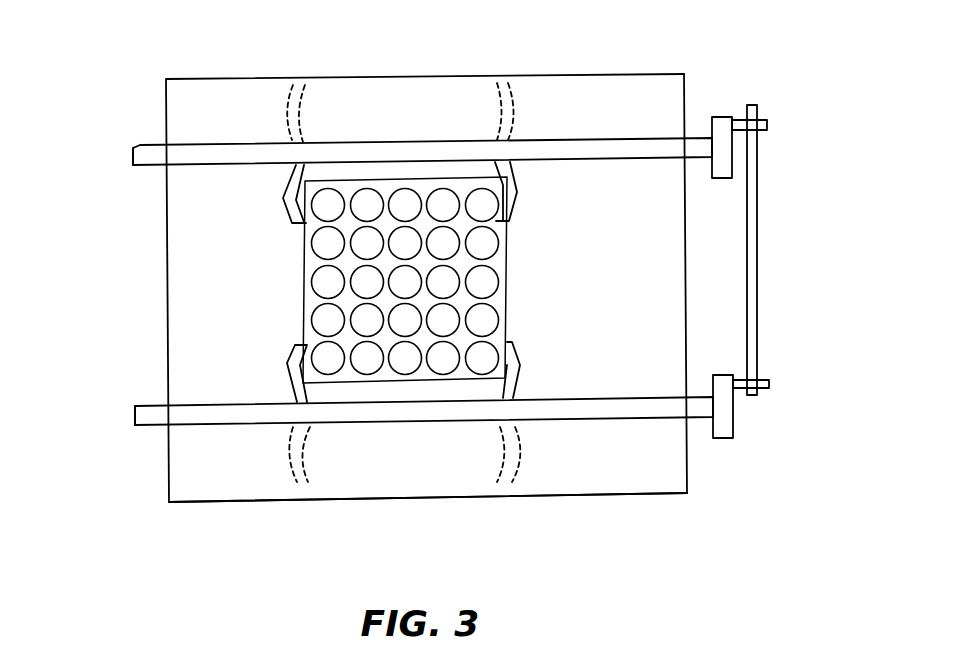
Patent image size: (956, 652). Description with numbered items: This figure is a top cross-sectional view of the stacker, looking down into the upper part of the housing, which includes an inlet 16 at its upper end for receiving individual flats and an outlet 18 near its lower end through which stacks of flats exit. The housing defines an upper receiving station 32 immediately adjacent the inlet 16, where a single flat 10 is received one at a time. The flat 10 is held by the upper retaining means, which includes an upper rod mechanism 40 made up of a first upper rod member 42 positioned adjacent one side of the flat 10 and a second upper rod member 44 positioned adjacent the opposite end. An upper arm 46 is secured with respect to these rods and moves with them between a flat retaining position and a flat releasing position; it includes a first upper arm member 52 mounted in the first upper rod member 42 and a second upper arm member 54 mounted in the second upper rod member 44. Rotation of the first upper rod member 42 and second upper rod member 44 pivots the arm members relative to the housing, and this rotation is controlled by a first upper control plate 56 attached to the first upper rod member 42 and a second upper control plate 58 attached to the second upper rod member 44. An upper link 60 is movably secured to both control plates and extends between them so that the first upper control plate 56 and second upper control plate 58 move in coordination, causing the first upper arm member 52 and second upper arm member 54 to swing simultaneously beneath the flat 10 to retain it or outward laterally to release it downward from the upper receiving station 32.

The flat 10 is at (508, 270).
The inlet 16 is at (167, 293).
The outlet 18 is at (687, 270).
The upper receiving station 32 is at (685, 458).
The upper rod mechanism 40 is at (140, 150).
The first upper rod member 42 is at (590, 145).
The second upper rod member 44 is at (612, 408).
The upper arm 46 is at (292, 182).
The first upper arm member 52 is at (295, 212).
The second upper arm member 54 is at (293, 380).
The first upper control plate 56 is at (717, 115).
The second upper control plate 58 is at (727, 425).
The upper link 60 is at (757, 183).